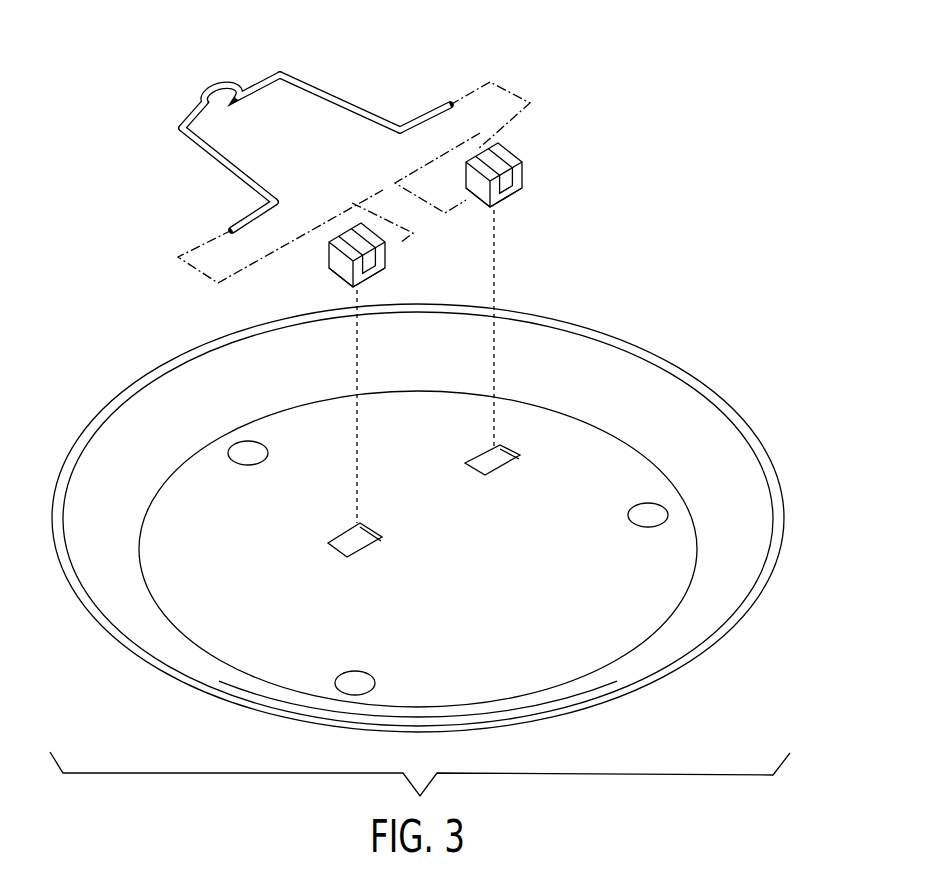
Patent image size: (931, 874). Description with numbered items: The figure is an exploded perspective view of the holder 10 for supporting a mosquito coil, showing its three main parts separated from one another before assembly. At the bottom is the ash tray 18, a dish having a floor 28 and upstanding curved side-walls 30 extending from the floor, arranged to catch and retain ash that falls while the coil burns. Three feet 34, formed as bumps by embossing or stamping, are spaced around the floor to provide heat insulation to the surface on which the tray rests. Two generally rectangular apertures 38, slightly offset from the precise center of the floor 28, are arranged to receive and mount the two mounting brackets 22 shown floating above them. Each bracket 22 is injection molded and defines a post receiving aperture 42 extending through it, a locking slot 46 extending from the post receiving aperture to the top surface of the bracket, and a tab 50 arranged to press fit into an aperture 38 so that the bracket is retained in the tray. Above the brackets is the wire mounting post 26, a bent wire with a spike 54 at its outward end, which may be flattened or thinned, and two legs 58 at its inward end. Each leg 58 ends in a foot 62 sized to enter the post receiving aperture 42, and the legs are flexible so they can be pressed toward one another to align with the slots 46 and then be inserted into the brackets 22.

The holder 10 is at (697, 232).
The ash tray 18 is at (670, 398).
The mounting bracket 22 is at (545, 165).
The wire mounting post 26 is at (302, 118).
The floor 28 is at (530, 630).
The curved side-walls 30 is at (740, 453).
The feet 34 is at (252, 456).
The apertures 38 is at (366, 546).
The post receiving aperture 42 is at (332, 273).
The slot 46 is at (367, 233).
The tab 50 is at (380, 270).
The spike 54 is at (208, 84).
The legs 58 is at (340, 100).
The foot 62 is at (428, 112).